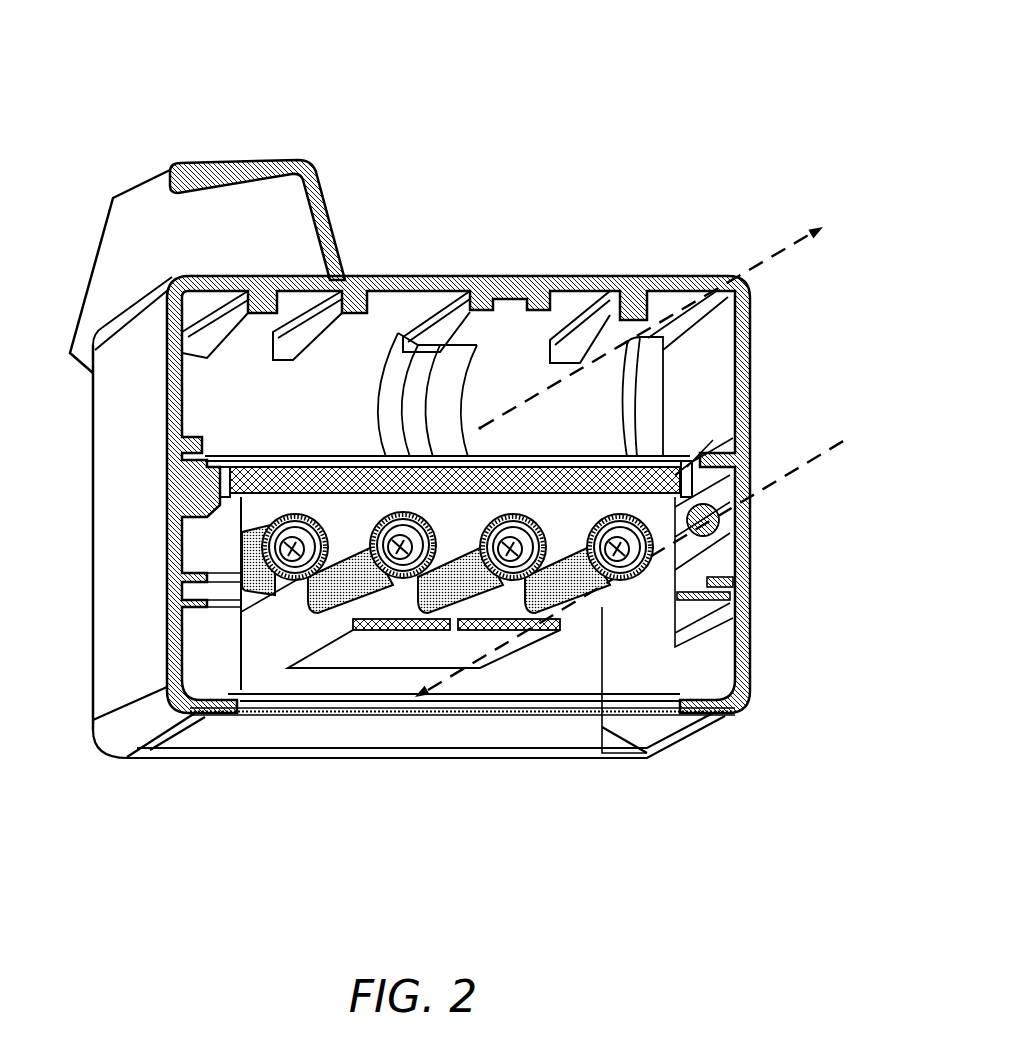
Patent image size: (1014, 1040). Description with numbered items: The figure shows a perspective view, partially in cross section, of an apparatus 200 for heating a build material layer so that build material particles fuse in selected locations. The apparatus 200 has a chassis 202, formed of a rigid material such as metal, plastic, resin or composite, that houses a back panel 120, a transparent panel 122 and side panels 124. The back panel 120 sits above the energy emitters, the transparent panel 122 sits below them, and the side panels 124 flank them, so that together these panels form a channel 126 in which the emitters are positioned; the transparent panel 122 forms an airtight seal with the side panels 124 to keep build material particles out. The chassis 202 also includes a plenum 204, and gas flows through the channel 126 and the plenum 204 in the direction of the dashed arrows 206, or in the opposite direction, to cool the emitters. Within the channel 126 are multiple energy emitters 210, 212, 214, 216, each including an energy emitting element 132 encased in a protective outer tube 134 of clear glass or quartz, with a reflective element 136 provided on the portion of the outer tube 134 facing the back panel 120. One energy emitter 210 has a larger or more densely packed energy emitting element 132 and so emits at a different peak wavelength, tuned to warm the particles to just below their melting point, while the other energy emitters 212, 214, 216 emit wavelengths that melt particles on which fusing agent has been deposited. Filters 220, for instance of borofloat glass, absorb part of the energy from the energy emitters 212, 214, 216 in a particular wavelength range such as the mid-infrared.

The apparatus 200 is at (192, 104).
The chassis 202 is at (422, 275).
The plenum 204 is at (528, 364).
The dashed arrows 206 is at (757, 267).
The back panel 120 is at (337, 472).
The energy emitter 210 is at (225, 523).
The energy emitting element 132 is at (240, 553).
The reflective element 136 is at (240, 573).
The outer tube 134 is at (263, 593).
The transparent panel 122 is at (227, 733).
The side panels 124 is at (245, 663).
The filters 220 is at (367, 653).
The energy emitter 212 is at (373, 608).
The energy emitter 214 is at (493, 609).
The energy emitter 216 is at (604, 604).
The channel 126 is at (572, 660).